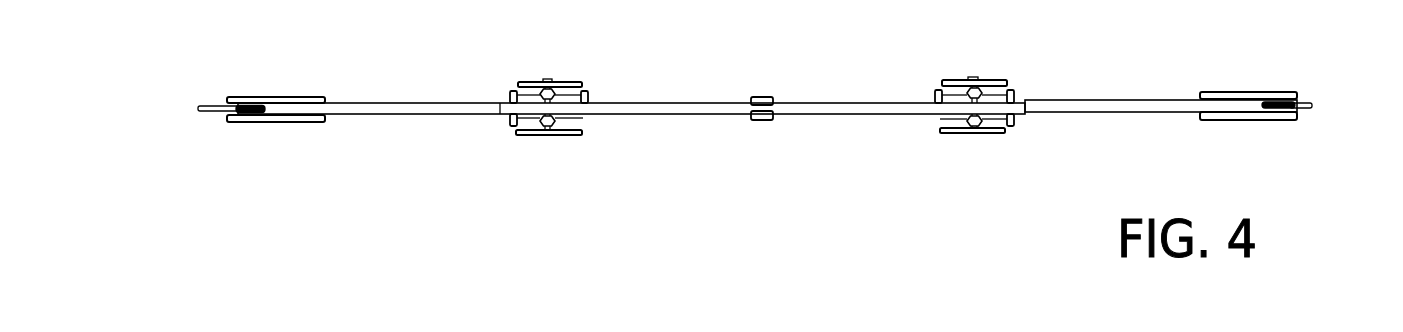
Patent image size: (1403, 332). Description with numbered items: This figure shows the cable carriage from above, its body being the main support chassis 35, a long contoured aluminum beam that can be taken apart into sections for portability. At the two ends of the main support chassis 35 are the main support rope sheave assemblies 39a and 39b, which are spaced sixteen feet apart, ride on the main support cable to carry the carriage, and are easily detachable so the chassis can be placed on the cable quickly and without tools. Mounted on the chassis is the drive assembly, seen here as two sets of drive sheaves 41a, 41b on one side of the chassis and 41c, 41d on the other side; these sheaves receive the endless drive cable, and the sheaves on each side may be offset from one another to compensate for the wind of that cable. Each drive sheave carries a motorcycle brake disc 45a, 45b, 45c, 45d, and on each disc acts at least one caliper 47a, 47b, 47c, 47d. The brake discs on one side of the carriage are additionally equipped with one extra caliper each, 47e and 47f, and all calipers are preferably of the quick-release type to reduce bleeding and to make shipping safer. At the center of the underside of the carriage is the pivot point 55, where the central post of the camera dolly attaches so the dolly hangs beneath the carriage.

The main support chassis 35 is at (388, 103).
The main support rope sheave assembly 39a is at (220, 105).
The main support rope sheave assembly 39b is at (1305, 103).
The drive sheave 41a is at (957, 81).
The drive sheave 41b is at (574, 81).
The drive sheave 41c is at (565, 136).
The drive sheave 41d is at (957, 133).
The brake disc 45a is at (983, 88).
The brake disc 45b is at (542, 80).
The brake disc 45c is at (583, 118).
The brake disc 45d is at (948, 120).
The caliper 47a is at (1016, 94).
The caliper 47b is at (508, 98).
The caliper 47c is at (511, 124).
The caliper 47d is at (1013, 126).
The additional caliper 47e is at (933, 92).
The additional caliper 47f is at (590, 101).
The pivot point 55 is at (763, 97).